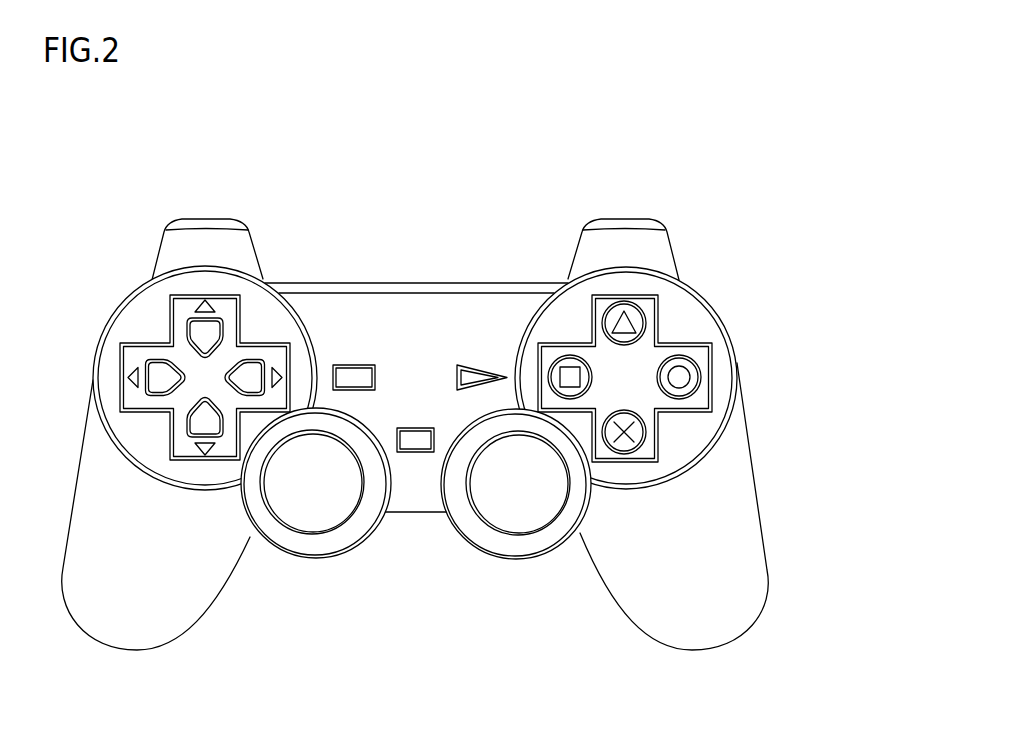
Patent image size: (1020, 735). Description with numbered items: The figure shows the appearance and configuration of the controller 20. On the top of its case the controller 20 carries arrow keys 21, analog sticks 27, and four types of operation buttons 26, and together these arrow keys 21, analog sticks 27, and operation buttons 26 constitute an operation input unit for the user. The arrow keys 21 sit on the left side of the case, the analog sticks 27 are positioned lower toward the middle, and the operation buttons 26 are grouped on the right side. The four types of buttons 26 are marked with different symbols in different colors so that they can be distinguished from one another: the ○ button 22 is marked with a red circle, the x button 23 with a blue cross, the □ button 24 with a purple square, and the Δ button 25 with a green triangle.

The controller 20 is at (807, 126).
The arrow keys 21 is at (140, 353).
The ○ button 22 is at (692, 367).
The x button 23 is at (717, 468).
The □ button 24 is at (588, 378).
The Δ button 25 is at (636, 318).
The operation buttons 26 is at (716, 398).
The analog sticks 27 is at (325, 508).